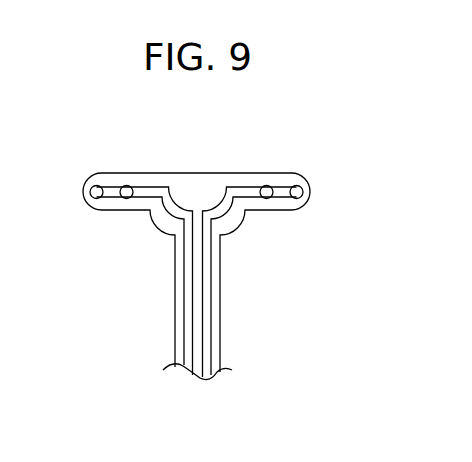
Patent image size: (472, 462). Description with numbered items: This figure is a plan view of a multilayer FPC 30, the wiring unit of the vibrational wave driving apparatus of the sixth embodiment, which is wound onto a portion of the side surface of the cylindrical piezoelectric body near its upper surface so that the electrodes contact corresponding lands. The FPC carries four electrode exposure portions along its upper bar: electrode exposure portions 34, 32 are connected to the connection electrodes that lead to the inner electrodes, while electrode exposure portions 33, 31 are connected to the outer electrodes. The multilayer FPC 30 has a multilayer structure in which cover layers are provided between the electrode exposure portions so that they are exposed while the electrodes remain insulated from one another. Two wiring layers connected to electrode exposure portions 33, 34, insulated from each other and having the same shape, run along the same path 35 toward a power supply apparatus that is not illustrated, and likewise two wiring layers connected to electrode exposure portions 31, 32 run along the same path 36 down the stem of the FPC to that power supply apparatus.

The multilayer FPC 30 is at (220, 320).
The electrode exposure portion 31 is at (267, 198).
The electrode exposure portion 32 is at (297, 186).
The electrode exposure portion 33 is at (127, 198).
The electrode exposure portion 34 is at (94, 186).
The path 35 is at (181, 367).
The path 36 is at (209, 373).